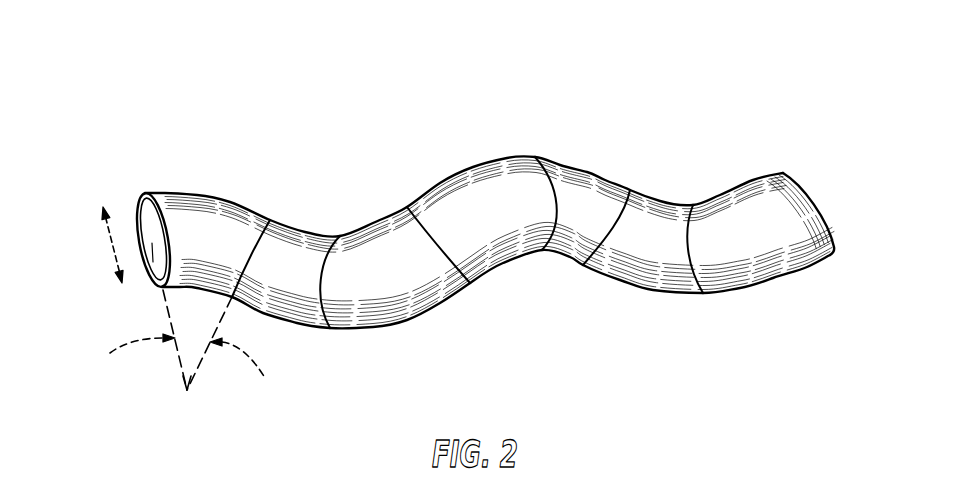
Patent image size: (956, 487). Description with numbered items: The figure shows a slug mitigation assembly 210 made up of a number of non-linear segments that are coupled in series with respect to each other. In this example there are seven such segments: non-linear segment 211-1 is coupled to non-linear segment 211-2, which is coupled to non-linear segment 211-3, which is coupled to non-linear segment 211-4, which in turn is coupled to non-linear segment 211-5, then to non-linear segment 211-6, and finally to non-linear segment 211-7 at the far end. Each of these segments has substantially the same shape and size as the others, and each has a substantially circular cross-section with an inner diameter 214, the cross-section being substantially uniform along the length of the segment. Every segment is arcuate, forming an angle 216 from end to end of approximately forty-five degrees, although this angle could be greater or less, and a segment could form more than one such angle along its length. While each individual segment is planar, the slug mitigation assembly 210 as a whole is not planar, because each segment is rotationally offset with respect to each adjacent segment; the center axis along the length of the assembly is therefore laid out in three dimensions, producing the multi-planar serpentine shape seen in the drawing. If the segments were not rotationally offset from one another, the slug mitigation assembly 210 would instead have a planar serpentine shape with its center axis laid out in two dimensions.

The slug mitigation assembly 210 is at (135, 68).
The non-linear segment 211-1 is at (197, 200).
The non-linear segment 211-2 is at (303, 233).
The non-linear segment 211-3 is at (407, 303).
The non-linear segment 211-4 is at (480, 173).
The non-linear segment 211-5 is at (580, 172).
The non-linear segment 211-6 is at (638, 268).
The non-linear segment 211-7 is at (783, 268).
The inner diameter 214 is at (112, 246).
The angle 216 is at (138, 343).